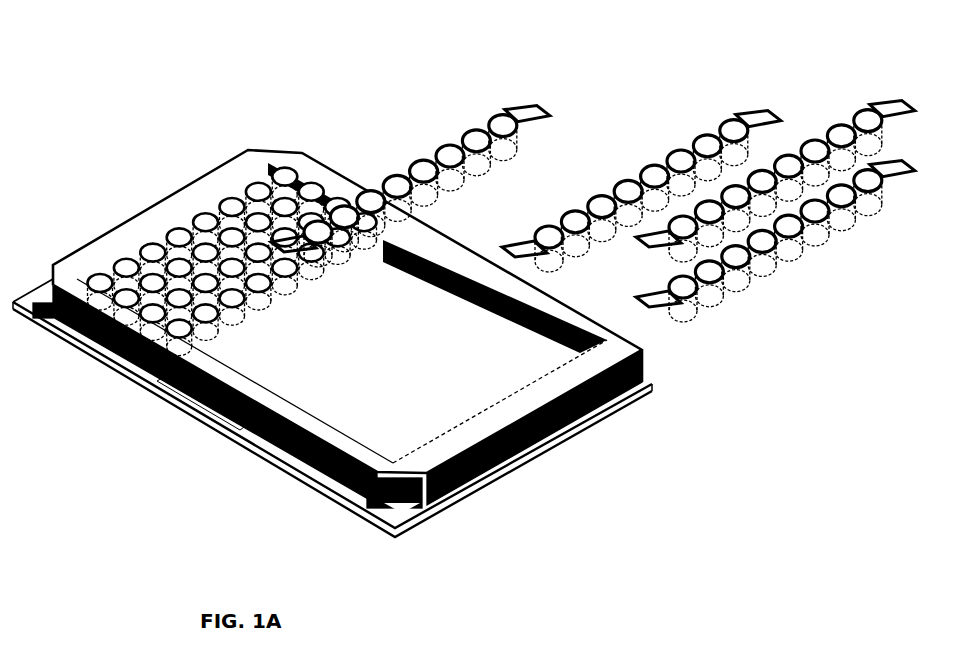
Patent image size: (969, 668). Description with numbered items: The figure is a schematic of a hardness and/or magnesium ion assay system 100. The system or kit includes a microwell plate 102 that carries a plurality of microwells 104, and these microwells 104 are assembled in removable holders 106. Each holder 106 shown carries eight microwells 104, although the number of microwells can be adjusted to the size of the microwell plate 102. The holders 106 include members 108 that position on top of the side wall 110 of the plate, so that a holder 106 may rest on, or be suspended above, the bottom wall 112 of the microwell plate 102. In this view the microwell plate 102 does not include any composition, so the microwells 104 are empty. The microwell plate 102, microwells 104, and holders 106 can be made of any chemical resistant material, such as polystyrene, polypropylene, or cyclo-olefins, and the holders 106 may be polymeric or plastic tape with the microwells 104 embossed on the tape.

The hardness and/or magnesium ion assay system 100 is at (124, 80).
The microwell plate 102 is at (262, 150).
The microwells 104 is at (424, 160).
The removable holders 106 is at (567, 77).
The members 108 is at (540, 102).
The side wall 110 is at (157, 389).
The bottom wall 112 is at (423, 371).